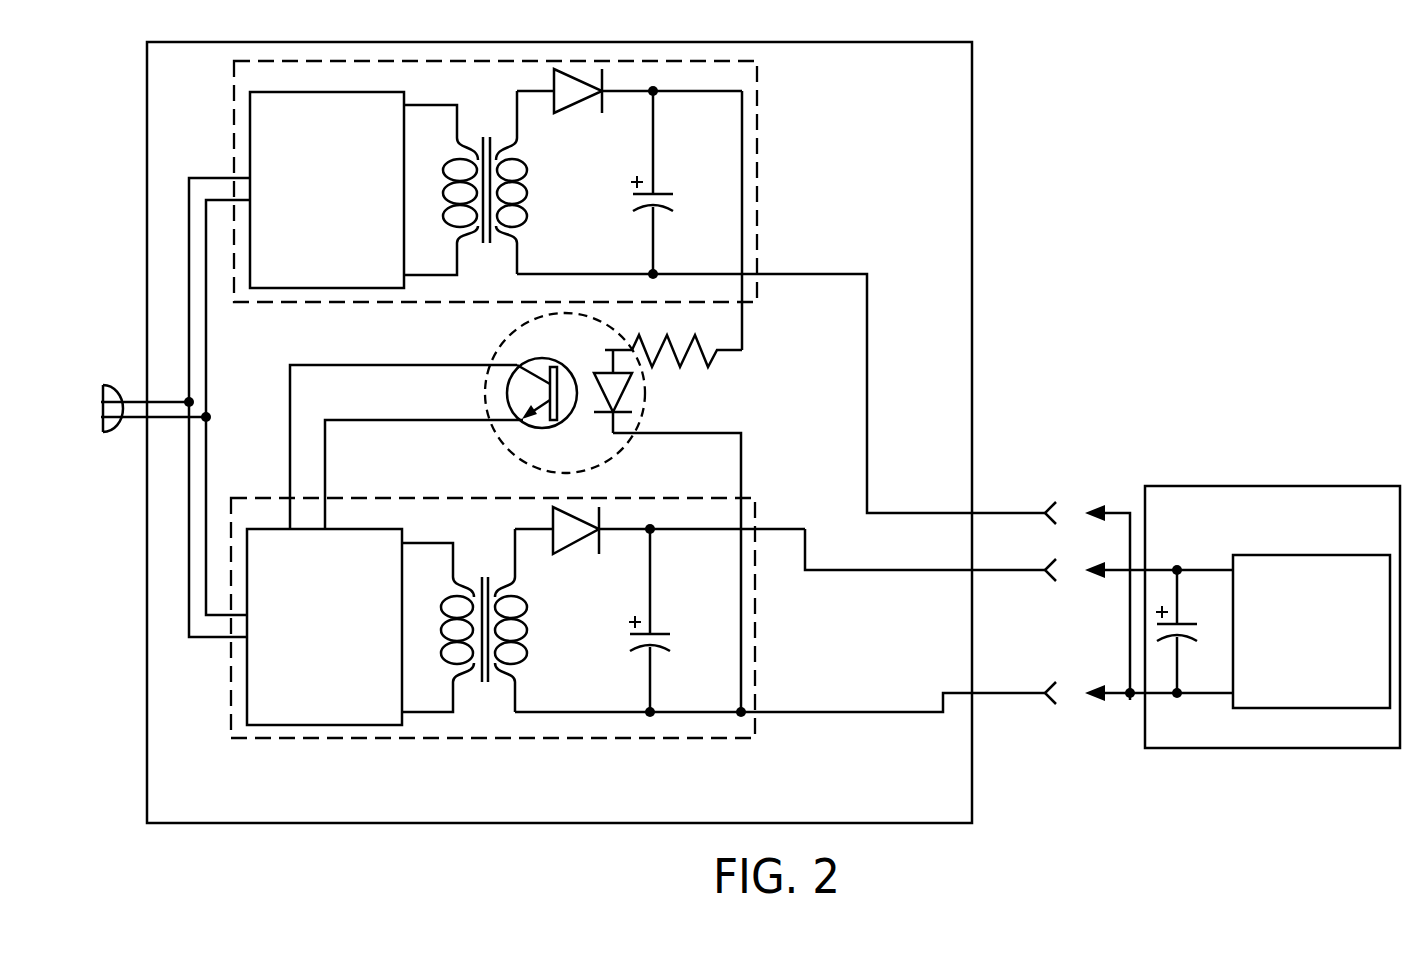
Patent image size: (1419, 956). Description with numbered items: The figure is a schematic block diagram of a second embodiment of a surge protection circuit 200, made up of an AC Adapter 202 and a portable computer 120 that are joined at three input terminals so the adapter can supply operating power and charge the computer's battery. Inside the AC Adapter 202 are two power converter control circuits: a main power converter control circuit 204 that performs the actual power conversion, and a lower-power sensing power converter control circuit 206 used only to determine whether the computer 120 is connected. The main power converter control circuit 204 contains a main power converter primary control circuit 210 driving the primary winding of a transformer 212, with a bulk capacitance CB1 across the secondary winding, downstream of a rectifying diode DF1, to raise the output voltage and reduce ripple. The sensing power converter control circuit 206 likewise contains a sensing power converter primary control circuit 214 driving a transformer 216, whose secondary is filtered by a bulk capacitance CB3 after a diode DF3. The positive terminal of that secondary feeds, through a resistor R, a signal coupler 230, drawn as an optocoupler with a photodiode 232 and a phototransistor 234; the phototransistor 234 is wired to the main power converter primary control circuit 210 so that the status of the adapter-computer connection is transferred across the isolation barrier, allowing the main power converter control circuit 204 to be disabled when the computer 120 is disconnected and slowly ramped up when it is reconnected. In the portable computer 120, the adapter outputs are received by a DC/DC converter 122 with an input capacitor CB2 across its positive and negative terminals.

The surge protection circuit 200 is at (1014, 213).
The AC Adapter 202 is at (250, 808).
The main power converter control circuit 204 is at (597, 739).
The sensing power converter control circuit 206 is at (758, 183).
The main power converter primary control circuit 210 is at (308, 711).
The transformer 212 is at (441, 607).
The sensing power converter primary control circuit 214 is at (310, 257).
The transformer 216 is at (442, 167).
The signal coupler 230 is at (612, 460).
The photodiode 232 is at (597, 393).
The phototransistor 234 is at (556, 368).
The computer 120 is at (1325, 550).
The DC/DC converter 122 is at (1294, 673).
The main output diode DF1 is at (575, 554).
The sensing output diode DF3 is at (576, 113).
The bulk capacitance CB1 is at (669, 635).
The portable computer input capacitor CB2 is at (1197, 625).
The bulk capacitance CB3 is at (671, 195).
The resistor R is at (674, 367).